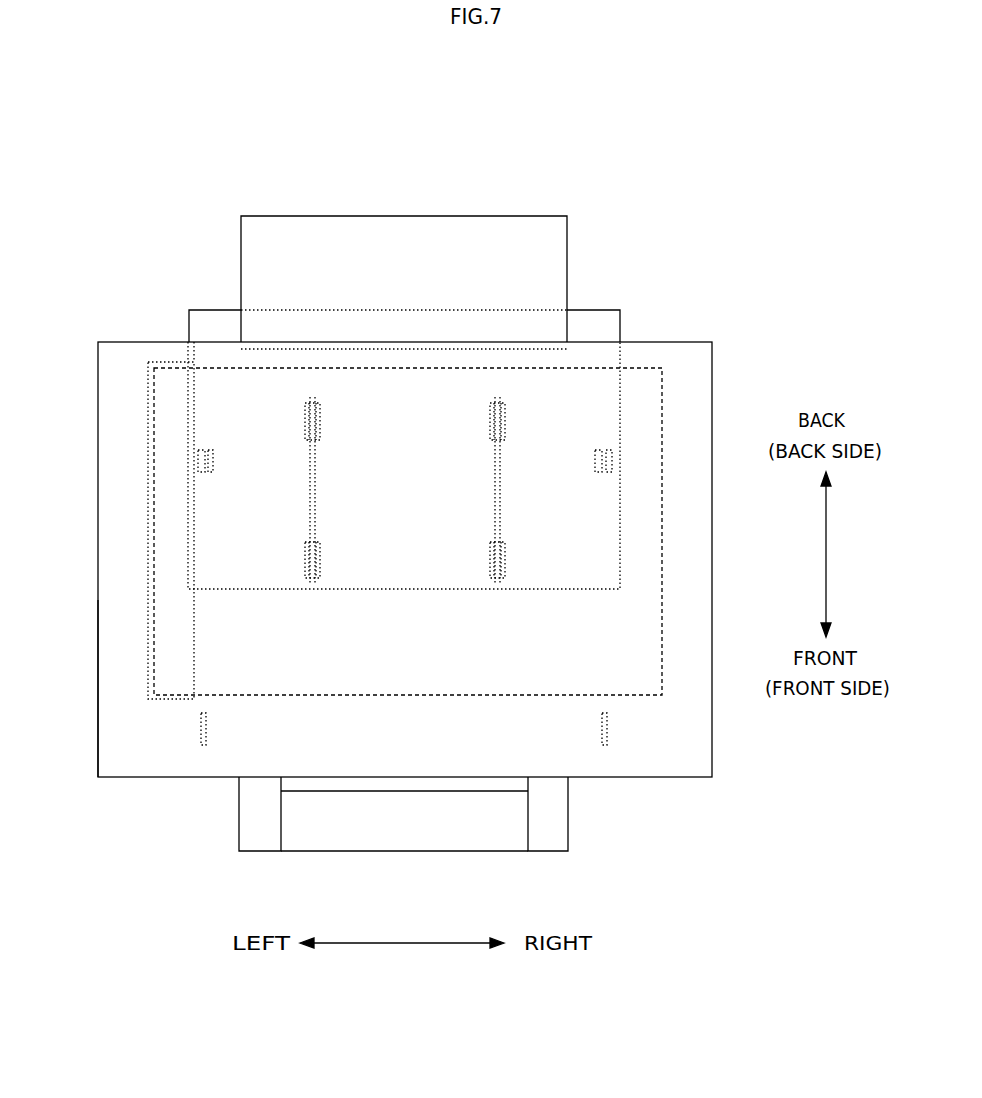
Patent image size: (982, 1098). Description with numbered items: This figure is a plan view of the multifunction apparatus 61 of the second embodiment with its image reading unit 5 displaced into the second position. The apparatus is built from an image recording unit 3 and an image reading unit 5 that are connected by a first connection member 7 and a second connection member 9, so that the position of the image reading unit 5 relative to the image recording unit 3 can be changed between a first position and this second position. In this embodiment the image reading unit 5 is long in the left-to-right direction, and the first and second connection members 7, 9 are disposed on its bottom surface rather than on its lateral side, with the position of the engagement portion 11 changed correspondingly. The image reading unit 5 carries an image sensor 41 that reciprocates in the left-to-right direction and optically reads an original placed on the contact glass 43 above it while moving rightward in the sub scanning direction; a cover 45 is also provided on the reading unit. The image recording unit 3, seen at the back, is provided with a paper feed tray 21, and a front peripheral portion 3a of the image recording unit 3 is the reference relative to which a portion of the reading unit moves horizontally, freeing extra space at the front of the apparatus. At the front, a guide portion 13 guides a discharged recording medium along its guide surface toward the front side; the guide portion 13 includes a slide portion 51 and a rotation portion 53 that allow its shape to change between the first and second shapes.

The multifunction apparatus 61 is at (621, 176).
The paper feed tray 21 is at (497, 229).
The first connection member 7 is at (312, 457).
The image sensor 41 is at (172, 362).
The image recording unit 3 is at (622, 323).
The front peripheral portion 3a is at (228, 589).
The engagement portion 11 is at (201, 450).
The contact glass 43 is at (662, 408).
The cover 45 is at (128, 673).
The image reading unit 5 is at (700, 742).
The second connection member 9 is at (201, 730).
The guide portion 13 is at (239, 822).
The slide portion 51 is at (556, 824).
The rotation portion 53 is at (311, 843).